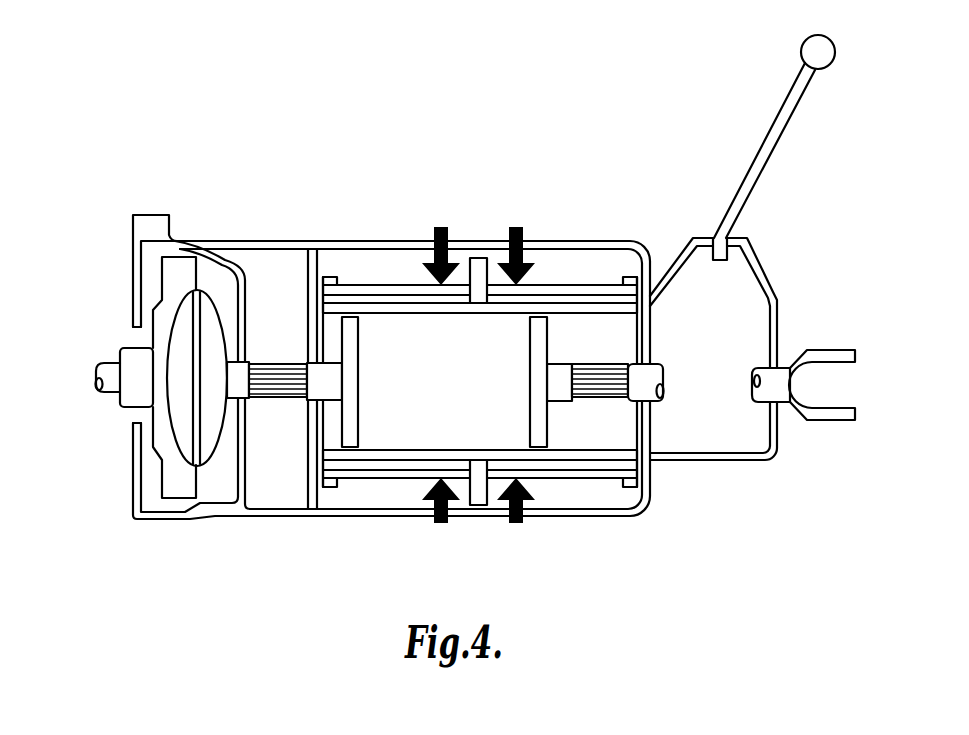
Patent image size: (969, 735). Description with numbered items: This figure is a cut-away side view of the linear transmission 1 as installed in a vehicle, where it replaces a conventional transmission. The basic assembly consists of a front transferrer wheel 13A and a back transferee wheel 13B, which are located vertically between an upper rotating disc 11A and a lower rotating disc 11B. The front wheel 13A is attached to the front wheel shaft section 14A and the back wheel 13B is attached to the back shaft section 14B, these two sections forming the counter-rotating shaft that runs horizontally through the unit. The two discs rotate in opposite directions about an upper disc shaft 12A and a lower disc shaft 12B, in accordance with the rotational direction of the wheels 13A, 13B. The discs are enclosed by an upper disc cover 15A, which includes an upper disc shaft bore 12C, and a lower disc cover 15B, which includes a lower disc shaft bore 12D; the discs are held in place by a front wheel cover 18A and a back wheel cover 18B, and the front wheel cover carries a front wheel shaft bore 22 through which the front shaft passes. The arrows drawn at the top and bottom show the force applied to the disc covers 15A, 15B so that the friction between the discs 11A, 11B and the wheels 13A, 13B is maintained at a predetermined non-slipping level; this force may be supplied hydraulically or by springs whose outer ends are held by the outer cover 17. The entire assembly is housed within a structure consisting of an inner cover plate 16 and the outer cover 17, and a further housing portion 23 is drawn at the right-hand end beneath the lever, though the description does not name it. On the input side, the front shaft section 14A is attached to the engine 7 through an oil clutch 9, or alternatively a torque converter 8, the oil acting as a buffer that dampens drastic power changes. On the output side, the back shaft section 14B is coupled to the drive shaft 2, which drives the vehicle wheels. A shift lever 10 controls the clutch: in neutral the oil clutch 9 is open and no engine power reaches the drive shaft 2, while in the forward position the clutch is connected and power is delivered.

The linear transmission 1 is at (526, 161).
The drive shaft 2 is at (826, 387).
The engine 7 is at (93, 377).
The torque converter 8 is at (178, 270).
The oil clutch 9 is at (202, 297).
The shift lever 10 is at (808, 58).
The upper rotating disc 11A is at (397, 310).
The lower rotating disc 11B is at (345, 480).
The upper disc shaft 12A is at (477, 258).
The lower disc shaft 12B is at (478, 496).
The upper disc shaft bore 12C is at (460, 255).
The lower disc shaft bore 12D is at (468, 500).
The front transferrer wheel 13A is at (352, 322).
The back transferee wheel 13B is at (540, 436).
The front wheel shaft section 14A is at (235, 388).
The back shaft section 14B is at (654, 402).
The upper disc cover 15A is at (582, 293).
The lower disc cover 15B is at (462, 474).
The inner cover plate 16 is at (310, 488).
The outer cover 17 is at (540, 247).
The front wheel cover 18A is at (330, 479).
The back wheel cover 18B is at (654, 241).
The front wheel shaft bore 22 is at (305, 360).
The lever housing wall 23 is at (653, 367).